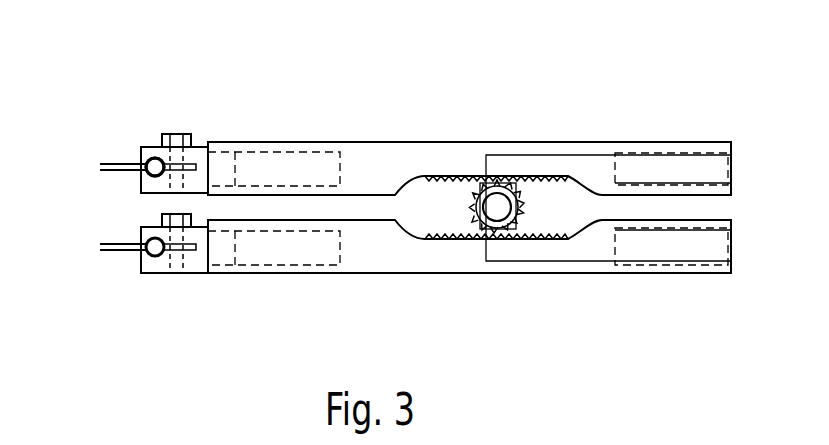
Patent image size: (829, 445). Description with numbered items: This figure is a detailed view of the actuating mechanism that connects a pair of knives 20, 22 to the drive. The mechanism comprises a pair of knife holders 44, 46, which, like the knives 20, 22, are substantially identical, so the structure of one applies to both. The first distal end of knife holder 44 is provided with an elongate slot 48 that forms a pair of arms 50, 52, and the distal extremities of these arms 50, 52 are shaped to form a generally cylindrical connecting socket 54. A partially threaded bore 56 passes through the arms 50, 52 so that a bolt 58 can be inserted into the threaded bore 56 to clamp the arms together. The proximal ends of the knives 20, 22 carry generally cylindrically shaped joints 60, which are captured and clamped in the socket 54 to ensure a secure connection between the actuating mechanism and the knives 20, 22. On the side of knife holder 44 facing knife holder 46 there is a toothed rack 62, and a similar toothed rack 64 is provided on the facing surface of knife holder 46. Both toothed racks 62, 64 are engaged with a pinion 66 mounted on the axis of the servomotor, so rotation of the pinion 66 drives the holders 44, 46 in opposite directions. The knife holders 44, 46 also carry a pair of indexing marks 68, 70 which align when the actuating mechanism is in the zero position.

The knife 20 is at (143, 163).
The knife 22 is at (124, 250).
The knife holder 44 is at (706, 141).
The knife holder 46 is at (707, 274).
The elongate slot 48 is at (186, 163).
The arm 50 is at (149, 159).
The arm 52 is at (144, 194).
The connecting socket 54 is at (145, 148).
The partially threaded bore 56 is at (209, 146).
The bolt 58 is at (184, 134).
The joint 60 is at (147, 172).
The toothed rack 62 is at (457, 176).
The toothed rack 64 is at (488, 229).
The pinion 66 is at (457, 238).
The indexing mark 68 is at (488, 156).
The indexing mark 70 is at (503, 260).